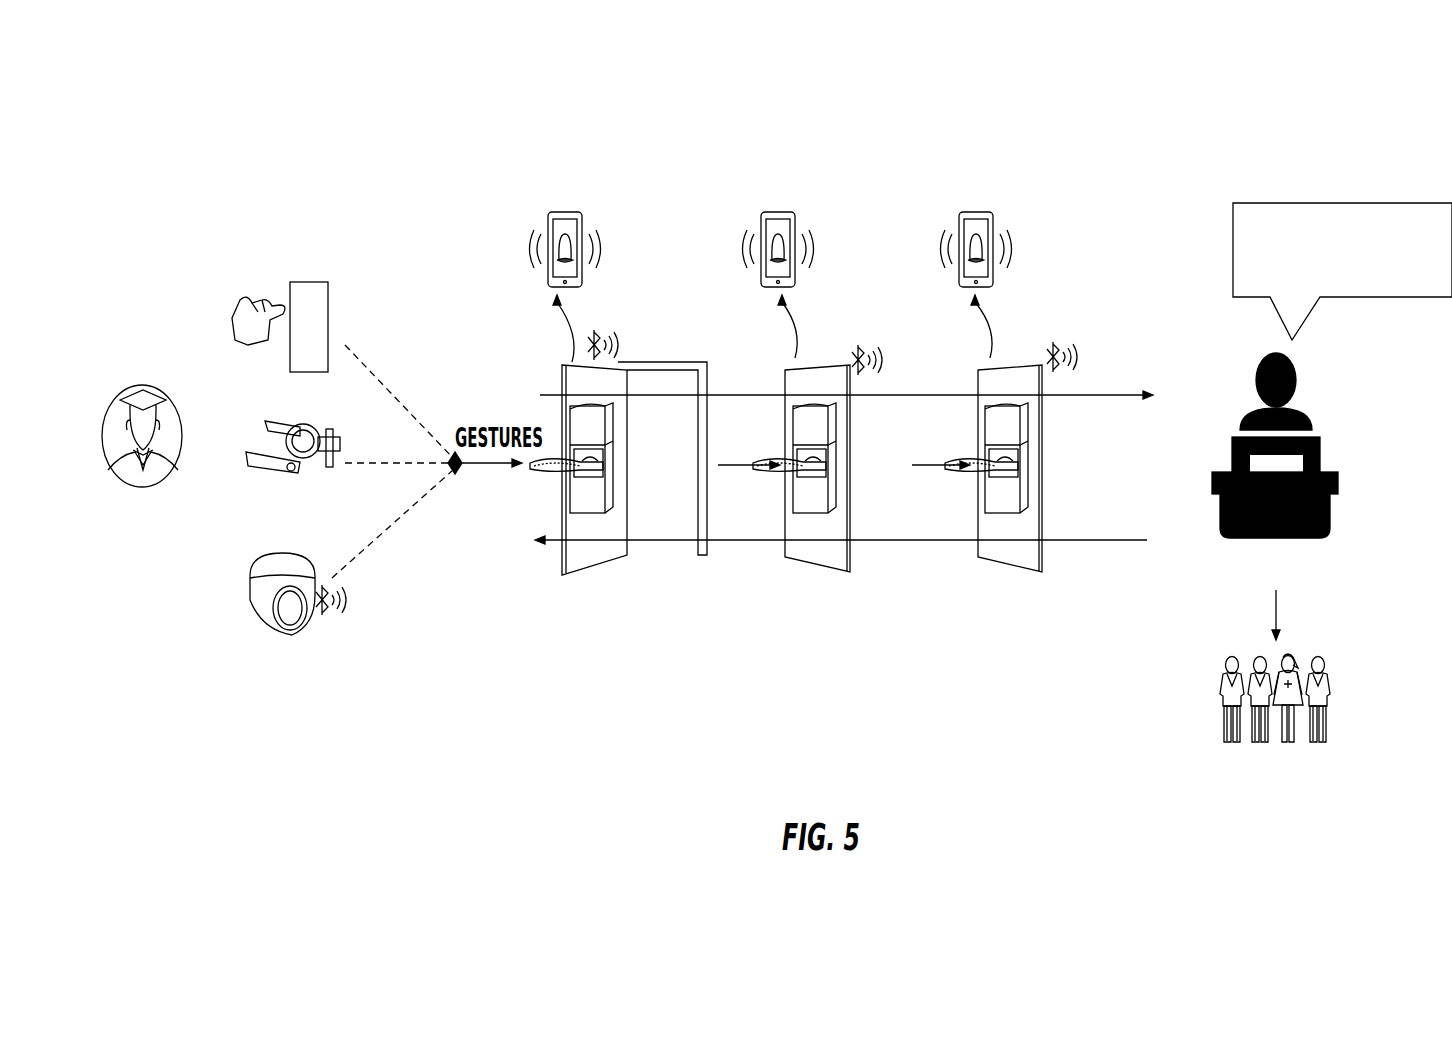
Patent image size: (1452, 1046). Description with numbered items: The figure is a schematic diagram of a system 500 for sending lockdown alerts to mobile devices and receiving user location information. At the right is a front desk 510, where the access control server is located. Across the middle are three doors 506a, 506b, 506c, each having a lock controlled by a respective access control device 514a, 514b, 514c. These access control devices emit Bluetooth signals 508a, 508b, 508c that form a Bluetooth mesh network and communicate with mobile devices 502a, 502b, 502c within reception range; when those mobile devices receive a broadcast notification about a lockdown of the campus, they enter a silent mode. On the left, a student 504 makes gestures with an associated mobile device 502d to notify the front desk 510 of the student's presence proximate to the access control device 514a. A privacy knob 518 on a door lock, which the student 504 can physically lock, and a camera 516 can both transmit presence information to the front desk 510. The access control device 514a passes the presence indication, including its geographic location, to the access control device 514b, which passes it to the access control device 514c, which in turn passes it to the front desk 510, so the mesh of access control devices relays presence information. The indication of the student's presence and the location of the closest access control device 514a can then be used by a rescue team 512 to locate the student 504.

The system 500 is at (1368, 155).
The student 504 is at (150, 385).
The mobile device 502d is at (328, 318).
The privacy knob 518 is at (256, 510).
The camera 516 is at (290, 695).
The mobile device 502a is at (573, 210).
The mobile device 502b is at (786, 210).
The mobile device 502c is at (984, 210).
The door 506a is at (598, 618).
The door 506b is at (820, 618).
The door 506c is at (1010, 618).
The Bluetooth signal 508a is at (625, 350).
The Bluetooth signal 508b is at (890, 365).
The Bluetooth signal 508c is at (1088, 362).
The access control device 514a is at (600, 428).
The access control device 514b is at (823, 428).
The access control device 514c is at (1015, 428).
The front desk 510 is at (1335, 562).
The rescue team 512 is at (1338, 757).